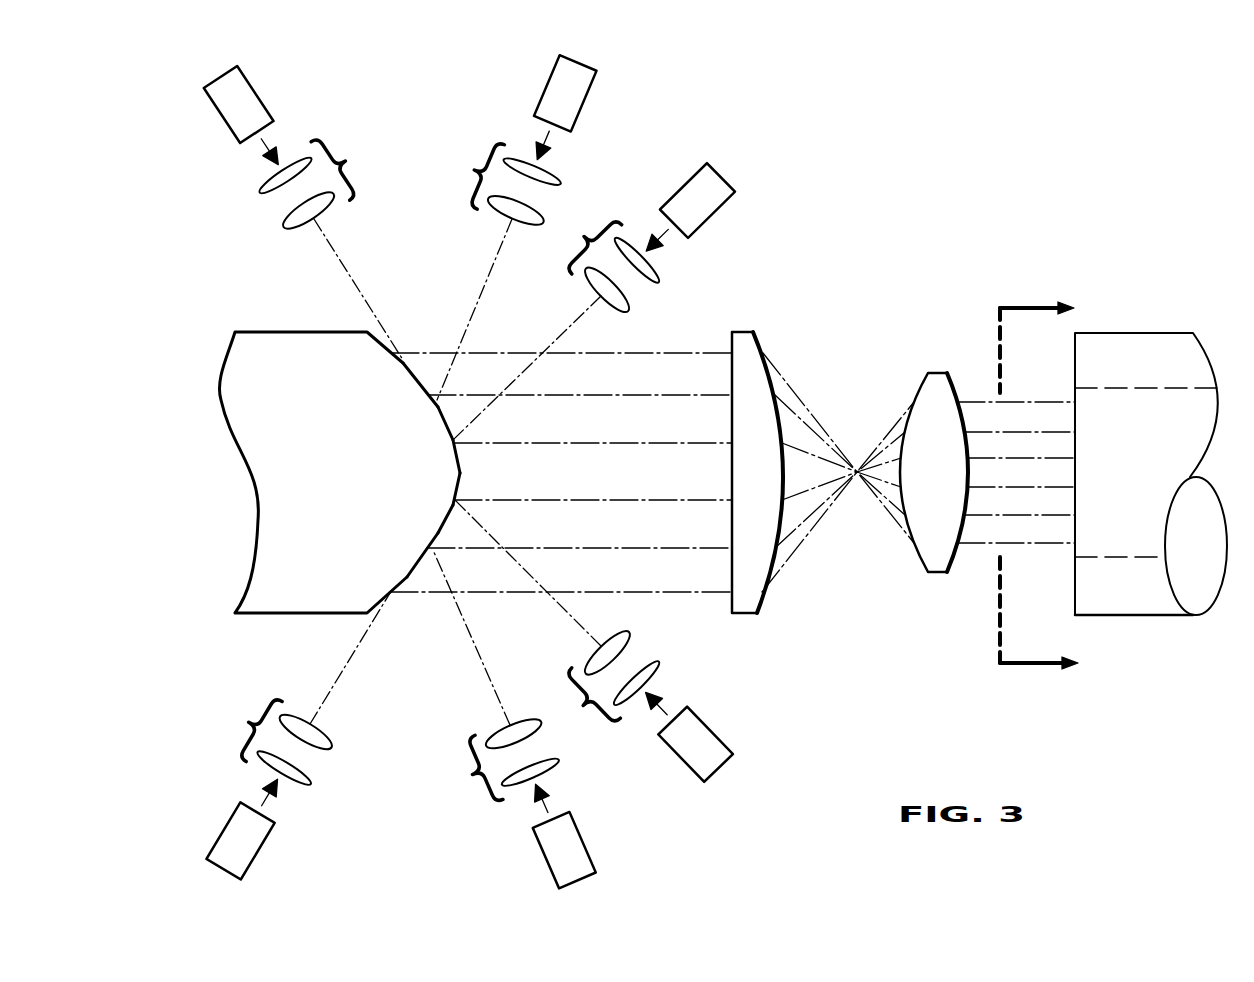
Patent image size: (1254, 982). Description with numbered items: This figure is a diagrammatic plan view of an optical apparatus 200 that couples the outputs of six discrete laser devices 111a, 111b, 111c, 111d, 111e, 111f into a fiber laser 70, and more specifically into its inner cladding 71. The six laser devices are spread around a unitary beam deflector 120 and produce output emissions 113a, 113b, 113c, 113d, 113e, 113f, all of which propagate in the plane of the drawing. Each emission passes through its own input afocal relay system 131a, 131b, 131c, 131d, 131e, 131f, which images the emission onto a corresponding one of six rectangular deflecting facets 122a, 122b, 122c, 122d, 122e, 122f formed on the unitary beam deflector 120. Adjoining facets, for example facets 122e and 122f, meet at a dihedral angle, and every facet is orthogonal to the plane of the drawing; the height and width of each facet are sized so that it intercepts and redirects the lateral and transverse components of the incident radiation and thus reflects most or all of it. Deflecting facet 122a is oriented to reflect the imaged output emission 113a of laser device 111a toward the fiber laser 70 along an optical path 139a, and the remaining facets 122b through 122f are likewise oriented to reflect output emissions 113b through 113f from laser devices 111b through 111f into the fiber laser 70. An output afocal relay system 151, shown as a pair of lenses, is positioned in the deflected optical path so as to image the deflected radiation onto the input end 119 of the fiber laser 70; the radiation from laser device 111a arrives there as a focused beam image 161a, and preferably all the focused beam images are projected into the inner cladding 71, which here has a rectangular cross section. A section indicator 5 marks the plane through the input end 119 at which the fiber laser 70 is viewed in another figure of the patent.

The optical apparatus 200 is at (1020, 208).
The discrete laser device 111a is at (210, 97).
The discrete laser device 111b is at (592, 97).
The discrete laser device 111c is at (735, 186).
The discrete laser device 111d is at (731, 742).
The discrete laser device 111e is at (530, 827).
The discrete laser device 111f is at (272, 830).
The input afocal relay system 131a is at (331, 185).
The input afocal relay system 131b is at (499, 187).
The input afocal relay system 131c is at (606, 267).
The input afocal relay system 131d is at (609, 675).
The input afocal relay system 131e is at (491, 758).
The input afocal relay system 131f is at (271, 744).
The output emission 113a is at (338, 246).
The output emission 113b is at (465, 318).
The output emission 113c is at (566, 325).
The output emission 113d is at (558, 610).
The output emission 113e is at (498, 700).
The output emission 113f is at (362, 645).
The unitary beam deflector 120 is at (297, 330).
The deflecting facet 122a is at (403, 365).
The deflecting facet 122b is at (438, 407).
The deflecting facet 122c is at (450, 432).
The deflecting facet 122d is at (458, 482).
The deflecting facet 122e is at (438, 533).
The deflecting facet 122f is at (407, 577).
The optical path 139a is at (622, 340).
The output afocal relay system 151 is at (950, 318).
The section line 5- 5 is at (1049, 489).
The input end 119 is at (1075, 357).
The focused beam image 161a is at (1075, 402).
The inner cladding 71 is at (1103, 558).
The fiber laser 70 is at (1078, 618).